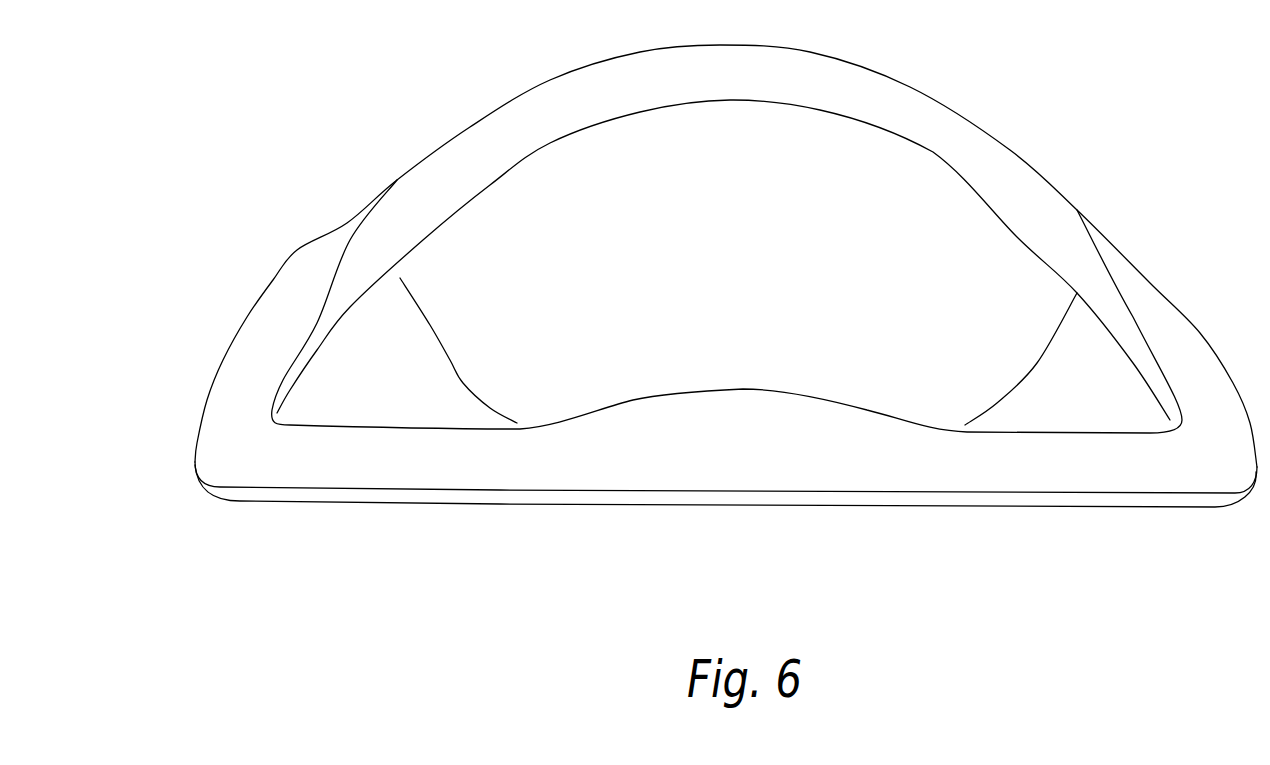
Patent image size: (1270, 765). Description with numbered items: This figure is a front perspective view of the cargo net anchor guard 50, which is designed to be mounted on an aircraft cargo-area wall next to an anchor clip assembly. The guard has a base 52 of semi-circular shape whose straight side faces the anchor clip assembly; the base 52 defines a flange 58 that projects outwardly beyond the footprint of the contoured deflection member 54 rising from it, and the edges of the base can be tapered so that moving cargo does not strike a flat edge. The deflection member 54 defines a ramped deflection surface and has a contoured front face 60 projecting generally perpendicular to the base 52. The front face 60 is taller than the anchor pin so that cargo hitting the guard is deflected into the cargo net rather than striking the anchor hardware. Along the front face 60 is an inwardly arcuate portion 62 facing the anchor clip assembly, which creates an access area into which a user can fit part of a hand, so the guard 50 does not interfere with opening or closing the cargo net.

The cargo net anchor guard 50 is at (338, 153).
The base 52 is at (303, 278).
The deflection member 54 is at (470, 140).
The flange 58 is at (278, 457).
The front face 60 is at (403, 397).
The inwardly arcuate portion 62 is at (608, 380).